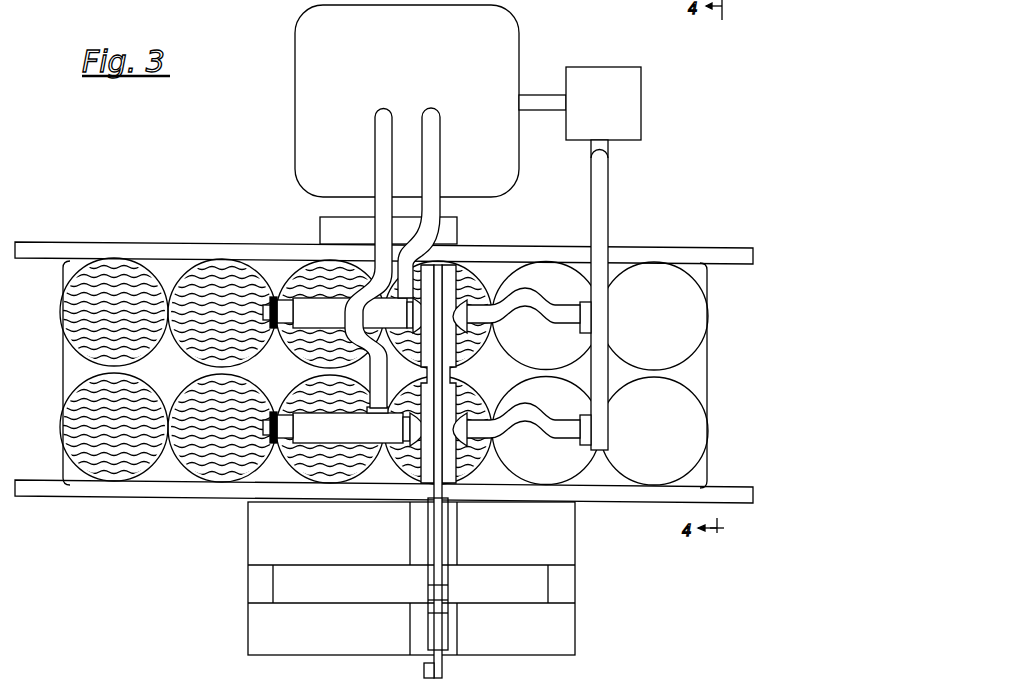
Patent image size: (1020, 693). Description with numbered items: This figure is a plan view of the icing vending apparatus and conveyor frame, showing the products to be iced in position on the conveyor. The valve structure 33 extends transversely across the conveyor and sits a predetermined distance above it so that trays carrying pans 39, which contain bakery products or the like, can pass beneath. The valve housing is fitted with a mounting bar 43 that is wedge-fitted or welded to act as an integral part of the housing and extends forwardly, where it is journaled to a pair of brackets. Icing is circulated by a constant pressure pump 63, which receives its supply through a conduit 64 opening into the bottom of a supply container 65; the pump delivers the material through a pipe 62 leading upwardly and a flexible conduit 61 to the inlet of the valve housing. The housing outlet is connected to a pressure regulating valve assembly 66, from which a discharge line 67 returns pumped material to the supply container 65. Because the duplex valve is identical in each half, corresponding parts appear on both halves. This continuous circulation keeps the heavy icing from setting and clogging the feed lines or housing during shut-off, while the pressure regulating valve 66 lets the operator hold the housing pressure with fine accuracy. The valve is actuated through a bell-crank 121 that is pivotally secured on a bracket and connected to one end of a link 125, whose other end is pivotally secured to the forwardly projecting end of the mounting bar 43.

The valve structure 33 is at (461, 289).
The pans 39 is at (88, 340).
The mounting bar 43 is at (442, 542).
The flexible conduit 61 is at (507, 306).
The pipe 62 is at (607, 214).
The constant pressure pump 63 is at (604, 74).
The conduit 64 is at (533, 96).
The supply container 65 is at (456, 58).
The pressure regulating valve assembly 66 is at (328, 318).
The discharge line 67 is at (428, 162).
The bell-crank 121 is at (440, 663).
The link 125 is at (445, 597).